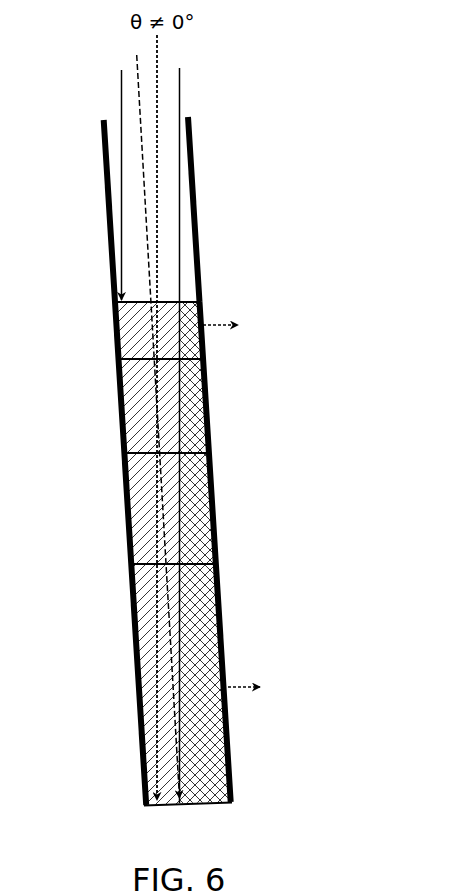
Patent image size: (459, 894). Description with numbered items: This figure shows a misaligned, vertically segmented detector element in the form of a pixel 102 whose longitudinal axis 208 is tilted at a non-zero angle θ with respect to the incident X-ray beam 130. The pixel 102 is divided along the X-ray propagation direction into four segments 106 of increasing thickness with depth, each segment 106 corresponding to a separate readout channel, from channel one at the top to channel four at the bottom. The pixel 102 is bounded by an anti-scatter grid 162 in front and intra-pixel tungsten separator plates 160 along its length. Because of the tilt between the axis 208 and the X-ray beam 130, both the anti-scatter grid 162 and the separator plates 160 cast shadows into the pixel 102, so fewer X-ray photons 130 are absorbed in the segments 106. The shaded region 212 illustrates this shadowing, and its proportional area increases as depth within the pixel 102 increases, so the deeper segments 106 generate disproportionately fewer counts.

The pixel 102 is at (253, 745).
The segments 106 is at (123, 678).
The X-ray beam 130 is at (122, 93).
The intra-pixel tungsten separator plates 160 is at (213, 490).
The anti-scatter grid 162 is at (197, 203).
The longitudinal axis 208 is at (143, 145).
The shaded region 212 is at (220, 598).